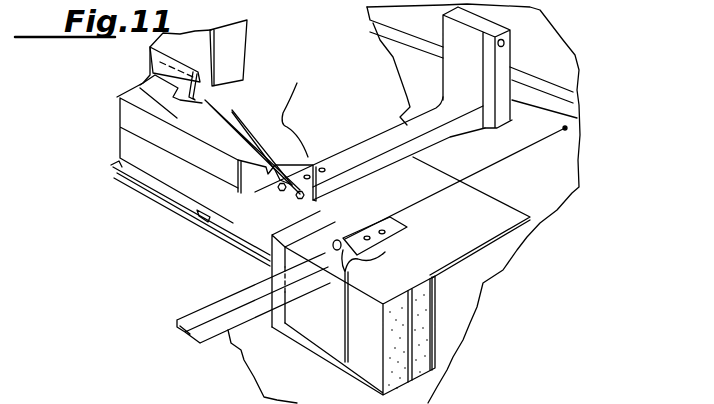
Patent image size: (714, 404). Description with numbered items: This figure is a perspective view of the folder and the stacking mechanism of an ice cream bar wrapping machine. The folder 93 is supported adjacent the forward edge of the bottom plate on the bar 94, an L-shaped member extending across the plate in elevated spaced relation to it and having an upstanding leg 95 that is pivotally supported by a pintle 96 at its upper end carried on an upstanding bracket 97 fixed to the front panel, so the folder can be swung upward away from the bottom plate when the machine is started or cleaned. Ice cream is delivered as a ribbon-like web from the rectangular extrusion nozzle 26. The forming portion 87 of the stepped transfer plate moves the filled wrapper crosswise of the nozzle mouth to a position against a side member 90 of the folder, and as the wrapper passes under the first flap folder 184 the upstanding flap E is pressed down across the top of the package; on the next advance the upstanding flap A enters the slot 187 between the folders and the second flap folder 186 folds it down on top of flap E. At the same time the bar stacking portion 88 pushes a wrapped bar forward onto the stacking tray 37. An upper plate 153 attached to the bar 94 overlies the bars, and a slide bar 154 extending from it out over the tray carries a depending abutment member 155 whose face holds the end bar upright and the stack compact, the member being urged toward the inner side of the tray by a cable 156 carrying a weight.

The extrusion nozzle 26 is at (237, 44).
The forming portion 87 is at (217, 110).
The side panel A is at (220, 113).
The top panel E is at (235, 115).
The first flap folder 184 is at (147, 97).
The second flap folder 186 is at (348, 203).
The folder 93 is at (180, 122).
The side member 90 is at (163, 158).
The slot 187 is at (172, 198).
The abutment member 155 is at (297, 250).
The slide bar 154 is at (204, 309).
The stacking tray 37 is at (253, 357).
The bar stacking portion 88 is at (440, 333).
The upper plate 153 is at (503, 228).
The cable 156 is at (518, 157).
The bar 94 is at (413, 135).
The upstanding leg 95 is at (580, 117).
The pintle 96 is at (505, 43).
The upstanding bracket 97 is at (505, 65).